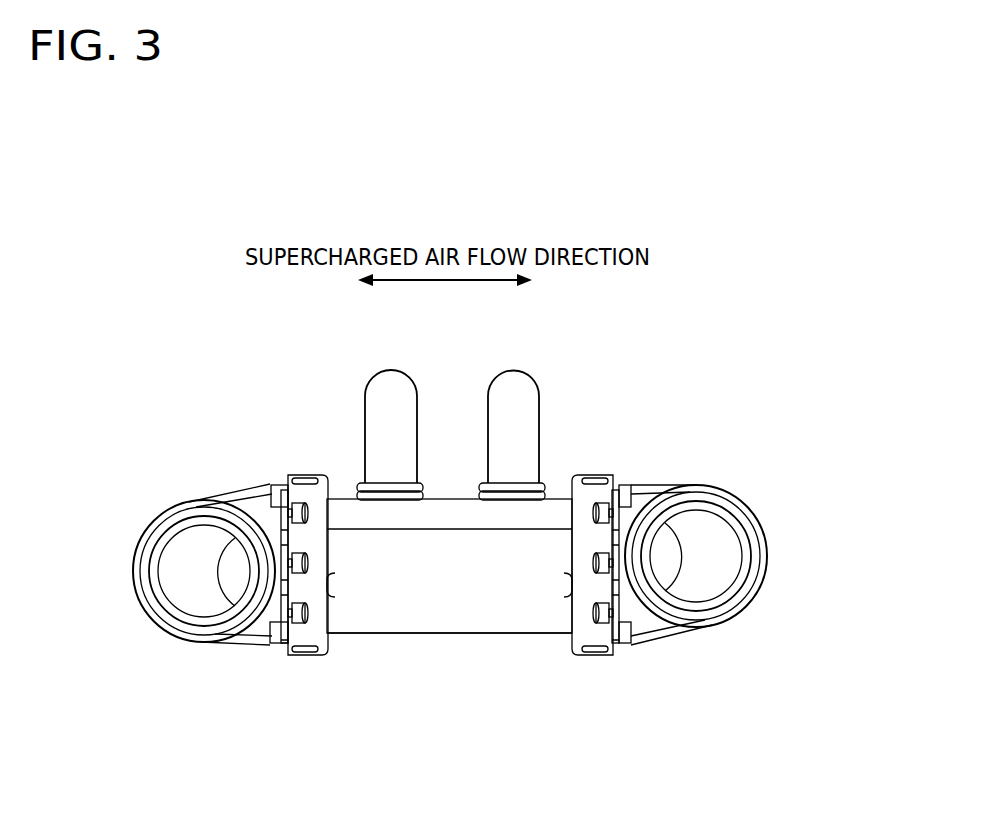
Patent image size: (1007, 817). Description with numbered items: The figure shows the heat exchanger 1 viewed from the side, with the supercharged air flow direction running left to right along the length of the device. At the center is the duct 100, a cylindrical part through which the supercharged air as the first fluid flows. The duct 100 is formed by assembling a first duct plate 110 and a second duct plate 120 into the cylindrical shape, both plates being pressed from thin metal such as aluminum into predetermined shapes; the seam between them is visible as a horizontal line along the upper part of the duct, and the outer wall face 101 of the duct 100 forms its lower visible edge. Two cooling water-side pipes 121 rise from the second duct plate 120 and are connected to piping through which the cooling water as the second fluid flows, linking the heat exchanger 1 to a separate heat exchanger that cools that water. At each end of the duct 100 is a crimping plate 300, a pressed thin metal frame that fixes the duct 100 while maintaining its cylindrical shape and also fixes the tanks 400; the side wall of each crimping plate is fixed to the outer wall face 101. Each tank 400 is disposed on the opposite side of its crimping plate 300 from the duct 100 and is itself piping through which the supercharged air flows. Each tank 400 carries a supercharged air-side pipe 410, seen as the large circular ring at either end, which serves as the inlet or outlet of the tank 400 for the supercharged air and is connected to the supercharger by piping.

The heat exchanger 1 is at (623, 433).
The duct 100 is at (487, 723).
The outer wall face 101 is at (518, 633).
The first duct plate 110 is at (437, 613).
The second duct plate 120 is at (432, 513).
The cooling water-side pipe 121 is at (528, 372).
The crimping plate 300 is at (297, 653).
The tank 400 is at (178, 510).
The supercharged air-side pipe 410 is at (163, 632).